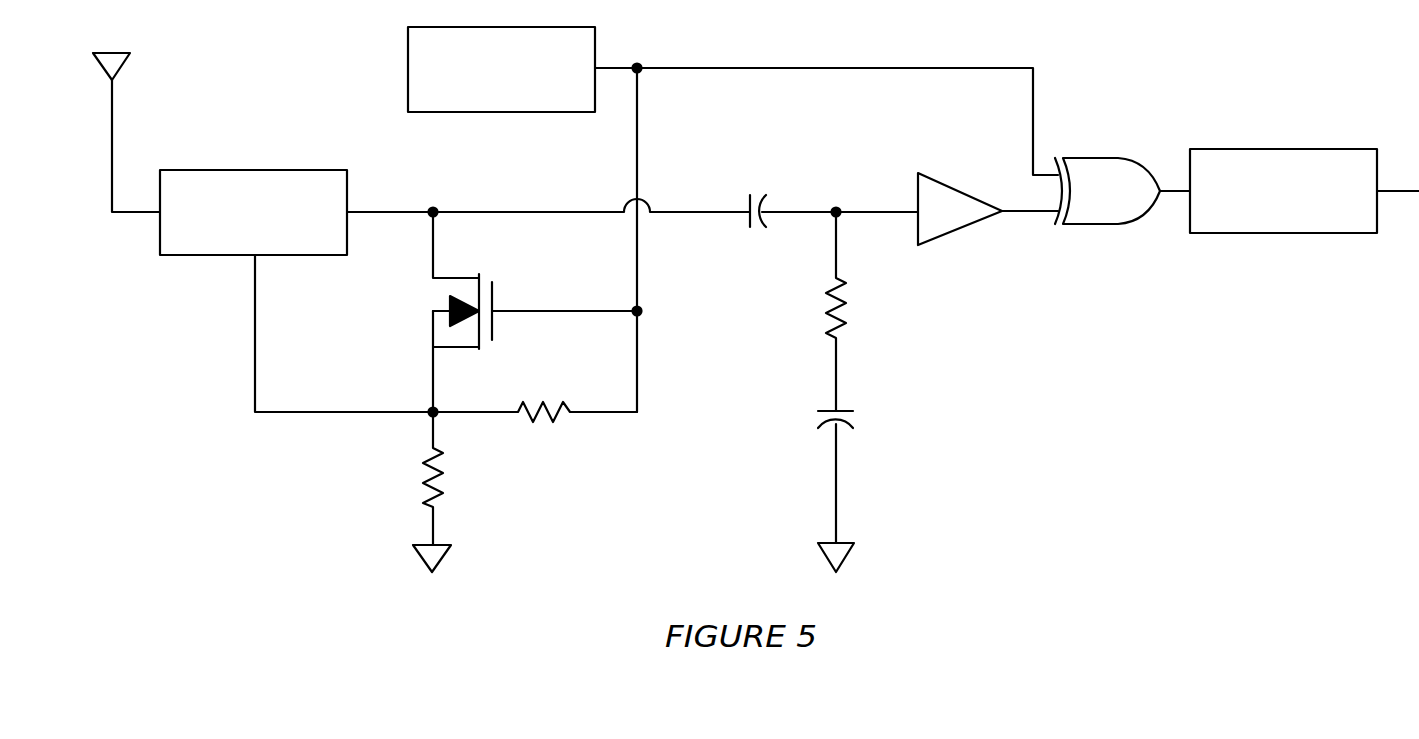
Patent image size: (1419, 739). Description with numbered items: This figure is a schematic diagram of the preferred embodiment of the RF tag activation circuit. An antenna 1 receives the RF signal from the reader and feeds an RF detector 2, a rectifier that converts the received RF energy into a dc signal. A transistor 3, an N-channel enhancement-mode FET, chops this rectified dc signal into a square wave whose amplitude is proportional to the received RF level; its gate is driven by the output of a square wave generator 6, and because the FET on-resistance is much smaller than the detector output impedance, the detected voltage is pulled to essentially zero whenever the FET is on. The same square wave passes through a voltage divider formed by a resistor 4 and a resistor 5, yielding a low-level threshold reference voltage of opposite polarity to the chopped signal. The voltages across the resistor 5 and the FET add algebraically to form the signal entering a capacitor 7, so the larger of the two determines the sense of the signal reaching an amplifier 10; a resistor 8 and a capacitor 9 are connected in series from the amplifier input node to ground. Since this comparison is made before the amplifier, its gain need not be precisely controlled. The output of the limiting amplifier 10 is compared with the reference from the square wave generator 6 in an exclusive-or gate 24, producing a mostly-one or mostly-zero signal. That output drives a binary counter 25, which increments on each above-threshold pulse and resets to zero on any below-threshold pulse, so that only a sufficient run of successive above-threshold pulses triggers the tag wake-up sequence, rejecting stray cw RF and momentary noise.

The antenna 1 is at (116, 131).
The RF detector 2 is at (296, 277).
The transistor 3 is at (530, 312).
The resistor 4 is at (535, 396).
The resistor 5 is at (424, 492).
The square wave generator 6 is at (522, 56).
The capacitor 7 is at (832, 196).
The resistor 8 is at (824, 311).
The capacitor 9 is at (823, 488).
The amplifier 10 is at (988, 206).
The exclusive-or gate 24 is at (1122, 176).
The binary counter 25 is at (1304, 176).